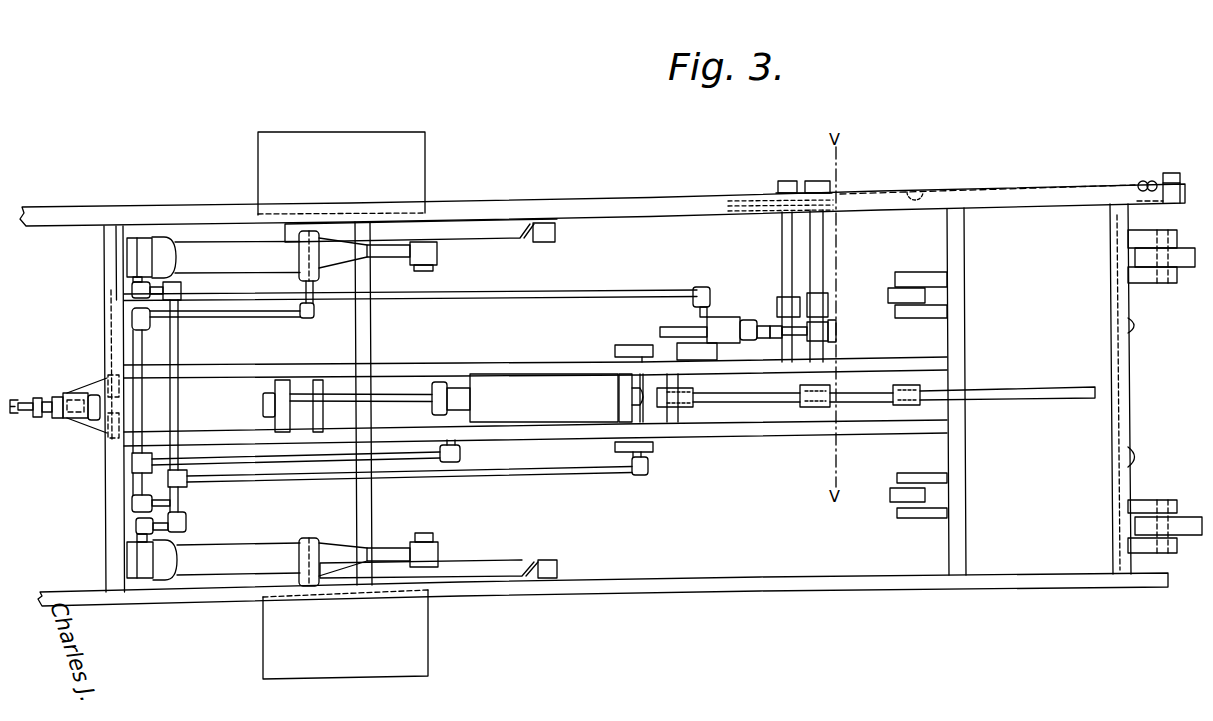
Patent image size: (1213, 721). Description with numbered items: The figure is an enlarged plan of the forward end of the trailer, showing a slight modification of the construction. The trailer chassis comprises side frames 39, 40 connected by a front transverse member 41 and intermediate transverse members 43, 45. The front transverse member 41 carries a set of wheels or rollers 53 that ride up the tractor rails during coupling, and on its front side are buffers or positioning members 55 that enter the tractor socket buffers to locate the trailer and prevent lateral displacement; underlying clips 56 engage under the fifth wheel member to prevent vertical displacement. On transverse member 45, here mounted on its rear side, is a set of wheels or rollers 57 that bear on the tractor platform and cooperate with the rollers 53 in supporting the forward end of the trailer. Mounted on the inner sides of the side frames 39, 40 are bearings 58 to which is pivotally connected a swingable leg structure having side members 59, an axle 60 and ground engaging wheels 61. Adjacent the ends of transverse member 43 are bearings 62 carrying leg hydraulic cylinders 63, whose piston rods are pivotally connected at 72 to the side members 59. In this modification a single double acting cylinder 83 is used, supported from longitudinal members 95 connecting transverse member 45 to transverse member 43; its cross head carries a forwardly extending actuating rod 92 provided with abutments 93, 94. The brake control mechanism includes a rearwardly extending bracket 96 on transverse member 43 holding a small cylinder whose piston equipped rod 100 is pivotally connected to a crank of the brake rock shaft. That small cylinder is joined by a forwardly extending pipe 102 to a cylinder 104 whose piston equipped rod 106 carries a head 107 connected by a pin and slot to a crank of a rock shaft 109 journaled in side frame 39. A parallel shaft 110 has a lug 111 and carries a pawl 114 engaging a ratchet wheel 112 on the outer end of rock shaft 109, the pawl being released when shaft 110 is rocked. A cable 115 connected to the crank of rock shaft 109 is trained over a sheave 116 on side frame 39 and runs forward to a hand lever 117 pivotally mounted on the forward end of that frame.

The side frame 39 is at (599, 200).
The side frame 40 is at (609, 596).
The front transverse member 41 is at (1129, 374).
The intermediate transverse member 43 is at (110, 226).
The intermediate transverse member 45 is at (958, 330).
The wheels or rollers 53 is at (1185, 259).
The buffers or positioning members 55 is at (1137, 325).
The underlying clips 56 is at (640, 345).
The wheels or rollers 57 is at (900, 296).
The bearings 58 is at (560, 568).
The side members 59 is at (497, 229).
The axle 60 is at (372, 334).
The ground engaging wheels 61 is at (343, 132).
The bearings 62 is at (142, 240).
The leg hydraulic cylinders 63 is at (207, 611).
The pivotal connection 72 is at (438, 255).
The double acting cylinder 83 is at (544, 398).
The actuating rod 92 is at (721, 403).
The abutment 93 is at (810, 408).
The abutment 94 is at (895, 406).
The longitudinal members 95 is at (504, 362).
The bracket 96 is at (70, 393).
The piston equipped rod 100 is at (25, 415).
The pipe 102 is at (458, 292).
The cylinder 104 is at (715, 326).
The piston equipped rod 106 is at (829, 342).
The head 107 is at (836, 326).
The rock shaft 109 is at (810, 251).
The shaft 110 is at (781, 271).
The lug 111 is at (800, 302).
The ratchet wheel 112 is at (830, 187).
The pawl 114 is at (797, 181).
The cable 115 is at (924, 186).
The sheave 116 is at (726, 212).
The hand lever 117 is at (1143, 180).